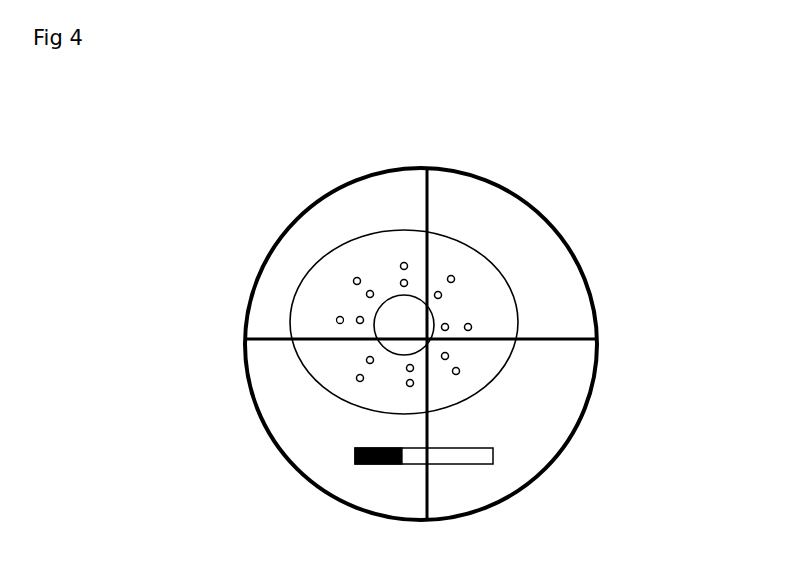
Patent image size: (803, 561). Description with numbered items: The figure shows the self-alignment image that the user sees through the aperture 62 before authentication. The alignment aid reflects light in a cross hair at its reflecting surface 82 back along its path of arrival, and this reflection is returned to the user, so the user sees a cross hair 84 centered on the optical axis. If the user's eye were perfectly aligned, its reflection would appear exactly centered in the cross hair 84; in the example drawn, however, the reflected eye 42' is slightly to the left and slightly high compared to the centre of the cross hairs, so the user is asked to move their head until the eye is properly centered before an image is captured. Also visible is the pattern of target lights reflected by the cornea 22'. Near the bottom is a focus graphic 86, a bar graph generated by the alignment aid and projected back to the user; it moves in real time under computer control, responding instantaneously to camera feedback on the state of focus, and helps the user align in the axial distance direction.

The aperture 62 is at (283, 227).
The cross hair 84 is at (511, 329).
The reflecting surface 82 is at (290, 375).
The reflected eye 42' is at (337, 322).
The target lights reflected by the cornea 22' is at (260, 292).
The focus graphic 86 is at (500, 455).